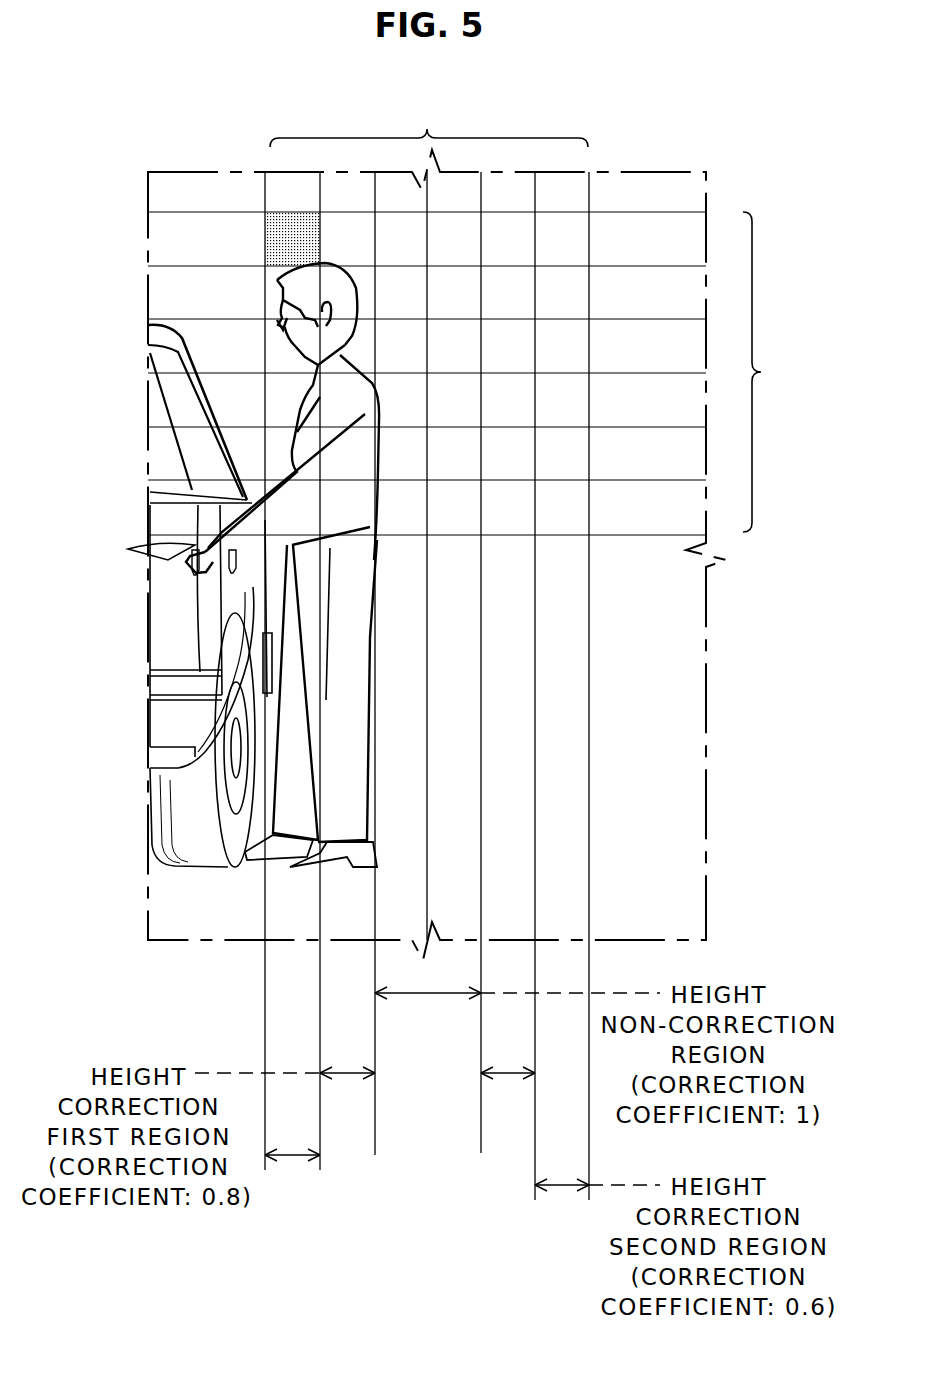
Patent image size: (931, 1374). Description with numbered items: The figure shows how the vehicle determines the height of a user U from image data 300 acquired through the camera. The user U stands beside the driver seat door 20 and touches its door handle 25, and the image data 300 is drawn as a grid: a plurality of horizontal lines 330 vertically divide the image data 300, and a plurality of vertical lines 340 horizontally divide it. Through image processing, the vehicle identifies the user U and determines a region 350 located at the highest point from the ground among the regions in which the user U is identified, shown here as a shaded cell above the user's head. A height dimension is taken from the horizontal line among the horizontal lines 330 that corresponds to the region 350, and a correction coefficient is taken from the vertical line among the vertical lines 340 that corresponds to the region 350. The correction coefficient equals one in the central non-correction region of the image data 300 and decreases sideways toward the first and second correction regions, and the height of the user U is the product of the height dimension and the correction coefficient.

The driver seat door 20 is at (175, 637).
The door handle 25 is at (188, 557).
The image data 300 is at (683, 172).
The horizontal lines 330 is at (775, 372).
The vertical lines 340 is at (429, 126).
The region 350 is at (278, 228).
The user U is at (363, 447).